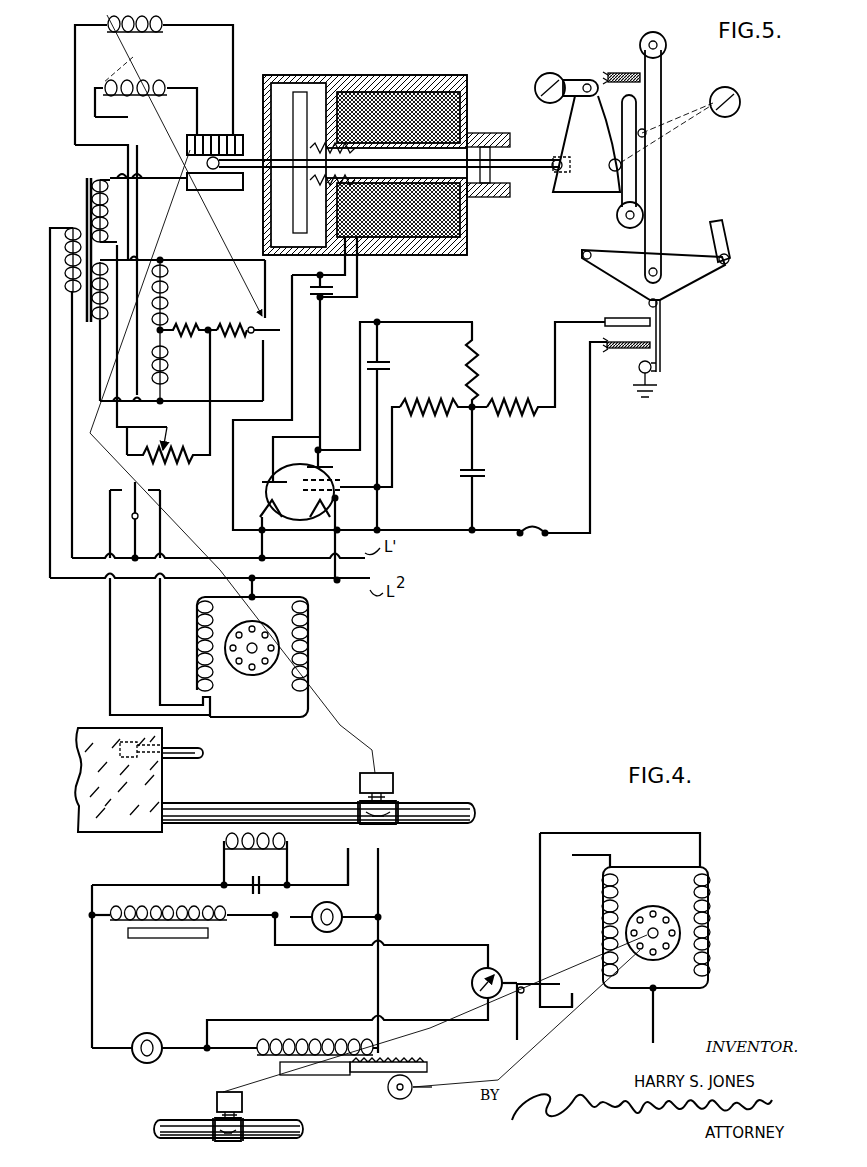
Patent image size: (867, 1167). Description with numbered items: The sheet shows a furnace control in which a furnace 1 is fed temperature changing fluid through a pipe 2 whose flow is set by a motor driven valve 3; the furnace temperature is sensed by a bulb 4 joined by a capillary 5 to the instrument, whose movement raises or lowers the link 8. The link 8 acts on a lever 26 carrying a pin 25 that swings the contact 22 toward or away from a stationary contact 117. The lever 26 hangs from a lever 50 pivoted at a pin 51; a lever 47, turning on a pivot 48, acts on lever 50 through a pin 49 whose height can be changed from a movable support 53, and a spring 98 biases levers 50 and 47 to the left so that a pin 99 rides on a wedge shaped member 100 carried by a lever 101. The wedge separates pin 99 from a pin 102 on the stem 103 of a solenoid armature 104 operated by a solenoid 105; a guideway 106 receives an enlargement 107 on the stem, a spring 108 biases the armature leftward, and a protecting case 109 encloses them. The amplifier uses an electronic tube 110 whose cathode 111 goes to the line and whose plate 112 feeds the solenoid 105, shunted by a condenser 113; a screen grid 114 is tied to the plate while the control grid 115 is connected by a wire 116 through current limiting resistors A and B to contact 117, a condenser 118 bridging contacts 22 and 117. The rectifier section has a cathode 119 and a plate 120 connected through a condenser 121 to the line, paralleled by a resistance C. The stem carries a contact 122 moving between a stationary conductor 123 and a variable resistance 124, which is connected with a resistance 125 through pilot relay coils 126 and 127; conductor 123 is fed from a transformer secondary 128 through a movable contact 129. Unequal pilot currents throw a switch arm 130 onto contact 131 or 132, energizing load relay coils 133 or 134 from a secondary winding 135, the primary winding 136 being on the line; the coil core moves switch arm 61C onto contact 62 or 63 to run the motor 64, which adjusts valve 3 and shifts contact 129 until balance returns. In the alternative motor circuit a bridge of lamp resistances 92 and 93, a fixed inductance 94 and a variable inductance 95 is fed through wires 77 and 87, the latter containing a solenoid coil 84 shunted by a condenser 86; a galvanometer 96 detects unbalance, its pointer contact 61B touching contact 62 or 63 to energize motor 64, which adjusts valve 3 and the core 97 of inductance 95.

In FIG. 5, the furnace 1 is at (160, 760).
In FIG. 5, the pipe 2 is at (255, 803).
In FIG. 4, the pipe 2 is at (258, 1124).
In FIG. 5, the motor driven valve 3 is at (395, 786).
In FIG. 4, the motor driven valve 3 is at (217, 1096).
In FIG. 5, the bulb 4 is at (115, 742).
In FIG. 5, the capillary 5 is at (193, 750).
In FIG. 5, the link 8 is at (722, 235).
In FIG. 5, the contact 22 is at (662, 334).
In FIG. 5, the pin 25 is at (650, 302).
In FIG. 5, the lever 26 is at (700, 268).
In FIG. 5, the lever 47 is at (624, 125).
In FIG. 5, the pivot 48 is at (619, 220).
In FIG. 5, the pin 49 is at (644, 128).
In FIG. 5, the lever 50 is at (656, 170).
In FIG. 5, the pin 51 is at (650, 35).
In FIG. 5, the movable support 53 is at (730, 92).
In FIG. 4, the contact 61B is at (565, 992).
In FIG. 5, the switch arm 61C is at (140, 498).
In FIG. 5, the contact 62 is at (142, 488).
In FIG. 4, the contact 62 is at (542, 977).
In FIG. 5, the contact 63 is at (128, 488).
In FIG. 4, the contact 63 is at (538, 993).
In FIG. 5, the motor 64 is at (275, 635).
In FIG. 4, the motor 64 is at (668, 912).
In FIG. 4, the wire 77 is at (381, 868).
In FIG. 4, the solenoid coil 84 is at (222, 842).
In FIG. 4, the condenser 86 is at (256, 896).
In FIG. 4, the wire 87 is at (346, 870).
In FIG. 4, the variable resistance 92 is at (340, 925).
In FIG. 4, the variable resistance 93 is at (143, 1033).
In FIG. 4, the fixed inductance 94 is at (145, 905).
In FIG. 4, the variable inductance 95 is at (278, 1040).
In FIG. 4, the galvanometer 96 is at (492, 968).
In FIG. 4, the core 97 is at (342, 1075).
In FIG. 5, the spring 98 is at (616, 73).
In FIG. 5, the pin 99 is at (622, 165).
In FIG. 5, the wedge shaped member 100 is at (575, 195).
In FIG. 5, the lever 101 is at (568, 82).
In FIG. 5, the pin 102 is at (556, 158).
In FIG. 5, the stem 103 is at (543, 170).
In FIG. 5, the solenoid armature 104 is at (298, 92).
In FIG. 5, the solenoid 105 is at (383, 92).
In FIG. 5, the guideway 106 is at (478, 197).
In FIG. 5, the enlargement 107 is at (490, 190).
In FIG. 5, the spring 108 is at (330, 140).
In FIG. 5, the protecting case 109 is at (270, 82).
In FIG. 5, the electronic tube 110 is at (283, 518).
In FIG. 5, the cathode 111 is at (316, 520).
In FIG. 5, the plate 112 is at (312, 462).
In FIG. 5, the condenser 113 is at (295, 290).
In FIG. 5, the screen grid 114 is at (325, 478).
In FIG. 5, the control grid 115 is at (338, 500).
In FIG. 5, the wire 116 is at (395, 465).
In FIG. 5, the contact 117 is at (605, 320).
In FIG. 5, the condenser 118 is at (460, 475).
In FIG. 5, the cathode 119 is at (268, 490).
In FIG. 5, the plate 120 is at (268, 478).
In FIG. 5, the condenser 121 is at (390, 368).
In FIG. 5, the contact 122 is at (217, 170).
In FIG. 5, the stationary conductor 123 is at (190, 190).
In FIG. 5, the variable resistance 124 is at (213, 134).
In FIG. 5, the resistance 125 is at (178, 453).
In FIG. 5, the pilot relay coil 126 is at (158, 31).
In FIG. 5, the pilot relay coil 127 is at (162, 85).
In FIG. 5, the transformer secondary 128 is at (104, 184).
In FIG. 5, the movable contact 129 is at (166, 426).
In FIG. 5, the switch arm 130 is at (270, 338).
In FIG. 5, the contact 131 is at (262, 317).
In FIG. 5, the contact 132 is at (257, 338).
In FIG. 5, the load relay coil 133 is at (168, 280).
In FIG. 5, the load relay coil 134 is at (173, 352).
In FIG. 5, the transformer secondary winding 135 is at (100, 318).
In FIG. 5, the primary winding 136 is at (66, 228).
In FIG. 5, the current limiting resistor A is at (422, 405).
In FIG. 5, the current limiting resistor B is at (508, 403).
In FIG. 5, the resistance C is at (482, 365).